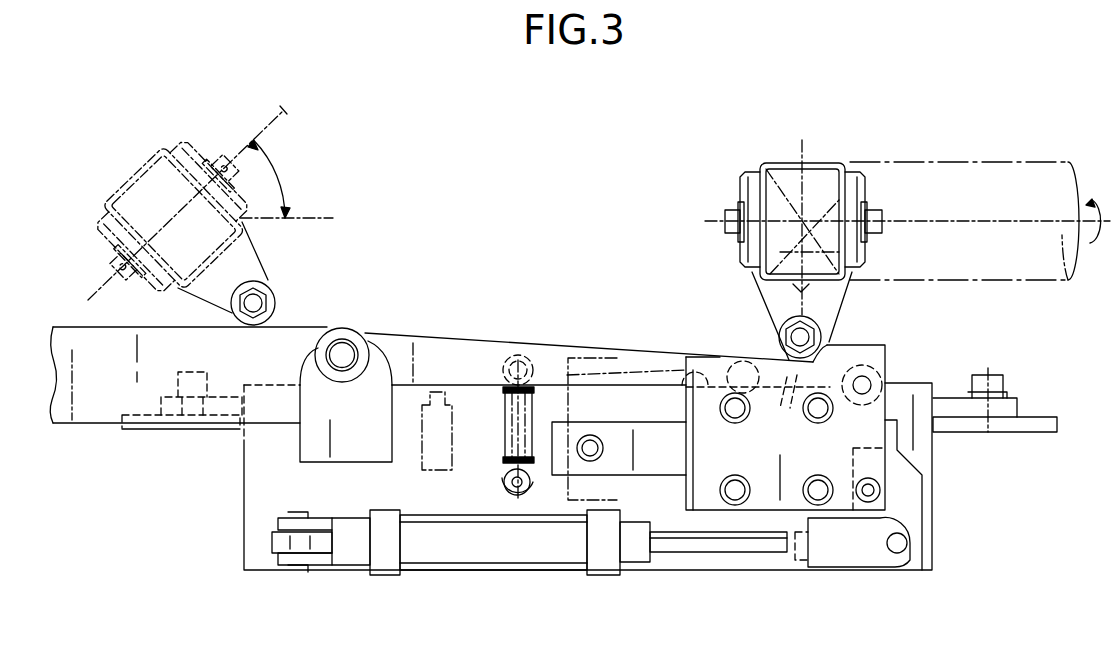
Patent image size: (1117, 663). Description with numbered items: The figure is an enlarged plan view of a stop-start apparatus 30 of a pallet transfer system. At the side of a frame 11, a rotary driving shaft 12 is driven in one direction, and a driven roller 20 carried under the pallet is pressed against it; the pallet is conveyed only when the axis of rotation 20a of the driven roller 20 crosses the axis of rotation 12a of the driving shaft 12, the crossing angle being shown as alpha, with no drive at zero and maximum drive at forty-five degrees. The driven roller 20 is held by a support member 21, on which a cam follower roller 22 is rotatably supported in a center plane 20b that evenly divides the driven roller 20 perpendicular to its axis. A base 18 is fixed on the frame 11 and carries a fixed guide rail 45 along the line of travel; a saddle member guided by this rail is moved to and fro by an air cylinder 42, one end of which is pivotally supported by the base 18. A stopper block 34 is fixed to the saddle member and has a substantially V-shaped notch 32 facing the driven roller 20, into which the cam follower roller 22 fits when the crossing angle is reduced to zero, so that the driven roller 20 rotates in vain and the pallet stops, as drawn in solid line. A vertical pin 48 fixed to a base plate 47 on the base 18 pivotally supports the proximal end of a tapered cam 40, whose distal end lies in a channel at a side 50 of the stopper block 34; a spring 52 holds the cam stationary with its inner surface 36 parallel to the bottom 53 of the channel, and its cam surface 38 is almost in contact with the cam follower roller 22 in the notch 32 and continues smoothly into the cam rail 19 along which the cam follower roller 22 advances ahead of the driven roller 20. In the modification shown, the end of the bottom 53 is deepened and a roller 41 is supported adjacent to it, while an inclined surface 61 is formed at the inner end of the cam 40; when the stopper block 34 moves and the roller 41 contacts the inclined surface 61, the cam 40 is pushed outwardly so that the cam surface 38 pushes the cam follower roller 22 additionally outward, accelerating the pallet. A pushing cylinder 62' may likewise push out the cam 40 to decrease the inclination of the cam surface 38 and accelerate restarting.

The frame 11 is at (140, 432).
The rotary driving shaft 12 is at (1017, 163).
The axis of rotation of the driving shaft 12a is at (310, 218).
The base 18 is at (928, 473).
The cam rail 19 is at (112, 333).
The driven roller 20 is at (777, 163).
The axis of rotation of the driven roller 20a is at (287, 126).
The center plane 20b is at (803, 150).
The support member 21 is at (862, 182).
The cam follower roller 22 is at (818, 330).
The stop-start apparatus 30 is at (802, 362).
The notch 32 is at (823, 355).
The stopper block 34 is at (877, 360).
The inner surface of the cam 36 is at (575, 386).
The cam surface 38 is at (570, 343).
The cam 40 is at (438, 345).
The roller 41 is at (870, 385).
The air cylinder 42 is at (505, 575).
The fixed guide rail 45 is at (575, 465).
The base plate 47 is at (363, 447).
The vertical pin 48 is at (343, 343).
The side of the stopper block 50 is at (853, 342).
The spring 52 is at (503, 404).
The bottom of the channel 53 is at (690, 378).
The inclined surface 61 is at (784, 408).
The air cylinder 62' is at (441, 451).